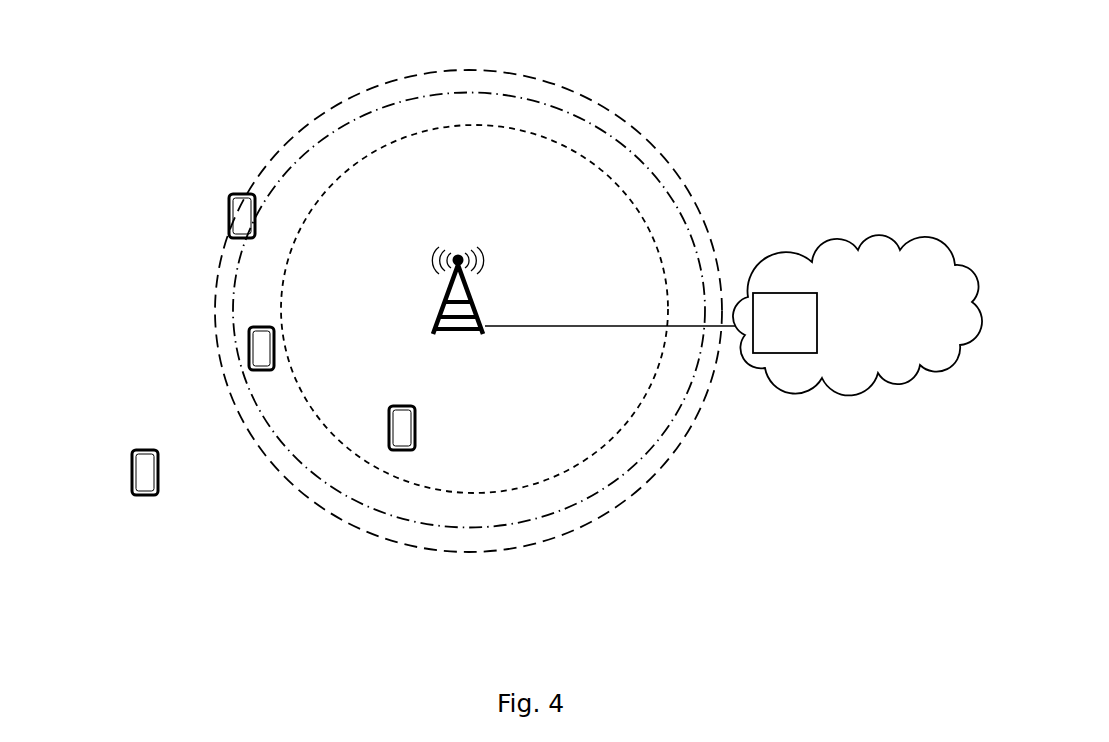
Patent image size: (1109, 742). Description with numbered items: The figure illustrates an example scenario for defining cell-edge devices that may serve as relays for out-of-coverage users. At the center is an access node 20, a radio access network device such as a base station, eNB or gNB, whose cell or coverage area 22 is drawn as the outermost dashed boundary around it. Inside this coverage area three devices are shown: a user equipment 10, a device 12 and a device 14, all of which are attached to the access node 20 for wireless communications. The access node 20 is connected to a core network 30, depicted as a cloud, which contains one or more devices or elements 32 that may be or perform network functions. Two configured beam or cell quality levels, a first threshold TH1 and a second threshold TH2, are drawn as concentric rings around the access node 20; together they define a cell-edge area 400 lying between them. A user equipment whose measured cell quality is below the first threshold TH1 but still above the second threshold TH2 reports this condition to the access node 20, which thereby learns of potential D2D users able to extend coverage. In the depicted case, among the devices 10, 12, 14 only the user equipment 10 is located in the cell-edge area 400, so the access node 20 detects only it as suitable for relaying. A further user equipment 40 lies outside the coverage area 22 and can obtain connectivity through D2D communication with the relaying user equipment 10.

The user equipment 10 is at (262, 326).
The device 12 is at (242, 193).
The device 14 is at (401, 405).
The access node 20 is at (478, 312).
The coverage area 22 is at (662, 158).
The core network 30 is at (785, 323).
The core network element 32 is at (857, 315).
The user equipment 40 is at (132, 477).
The cell-edge area 400 is at (333, 132).
The first threshold TH1 is at (469, 297).
The second threshold TH2 is at (658, 257).